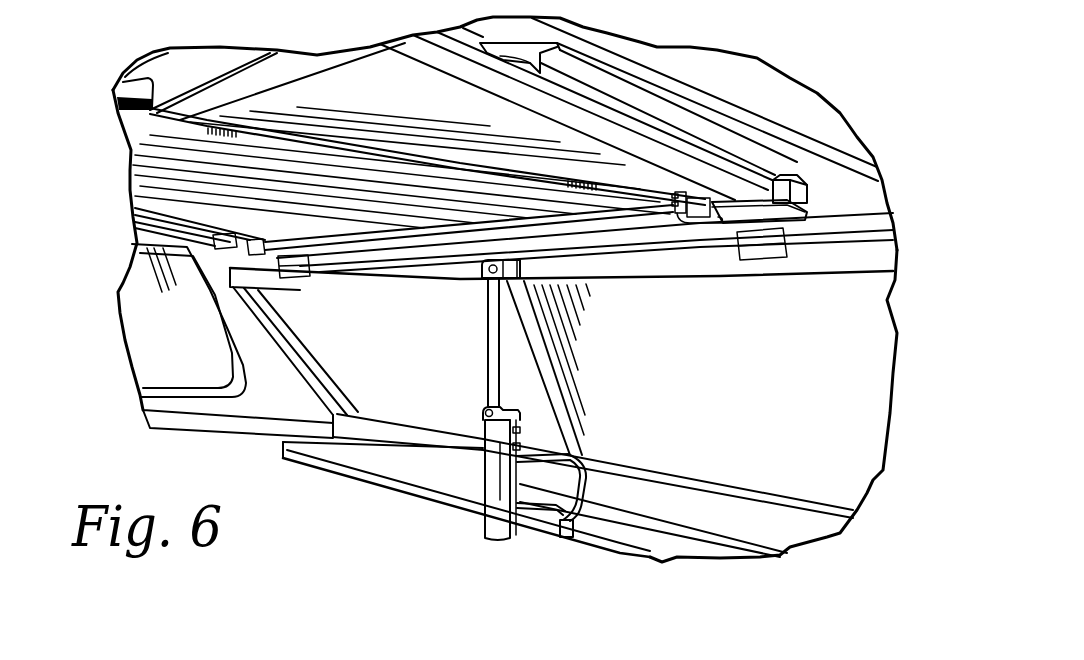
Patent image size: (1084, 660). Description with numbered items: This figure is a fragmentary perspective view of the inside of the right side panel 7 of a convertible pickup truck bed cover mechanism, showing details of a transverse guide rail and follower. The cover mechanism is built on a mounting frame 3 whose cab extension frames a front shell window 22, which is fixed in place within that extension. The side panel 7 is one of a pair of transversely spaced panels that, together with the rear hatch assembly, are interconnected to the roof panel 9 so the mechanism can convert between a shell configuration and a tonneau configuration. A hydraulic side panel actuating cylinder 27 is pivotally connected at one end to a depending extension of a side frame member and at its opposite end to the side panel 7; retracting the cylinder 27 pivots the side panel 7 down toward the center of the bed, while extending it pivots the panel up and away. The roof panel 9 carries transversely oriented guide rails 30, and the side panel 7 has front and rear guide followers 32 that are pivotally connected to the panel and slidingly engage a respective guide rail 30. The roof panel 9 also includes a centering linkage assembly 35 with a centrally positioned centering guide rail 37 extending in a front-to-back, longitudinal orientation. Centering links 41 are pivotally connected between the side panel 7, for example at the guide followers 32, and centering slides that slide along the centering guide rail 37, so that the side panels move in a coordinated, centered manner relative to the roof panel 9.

The mounting frame 3 is at (388, 474).
The side panel 7 is at (873, 388).
The roof panel 9 is at (768, 72).
The front shell window 22 is at (145, 361).
The hydraulic side panel actuating cylinder 27 is at (494, 480).
The guide rail 30 is at (652, 144).
The guide follower 32 is at (803, 190).
The centering linkage assembly 35 is at (169, 137).
The centering guide rail 37 is at (156, 67).
The centering link 41 is at (364, 152).